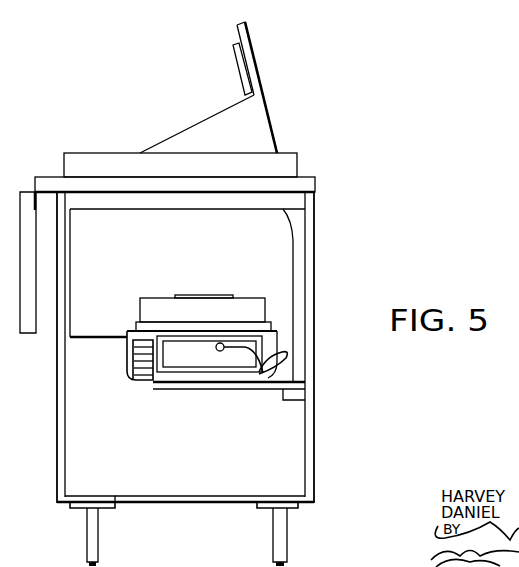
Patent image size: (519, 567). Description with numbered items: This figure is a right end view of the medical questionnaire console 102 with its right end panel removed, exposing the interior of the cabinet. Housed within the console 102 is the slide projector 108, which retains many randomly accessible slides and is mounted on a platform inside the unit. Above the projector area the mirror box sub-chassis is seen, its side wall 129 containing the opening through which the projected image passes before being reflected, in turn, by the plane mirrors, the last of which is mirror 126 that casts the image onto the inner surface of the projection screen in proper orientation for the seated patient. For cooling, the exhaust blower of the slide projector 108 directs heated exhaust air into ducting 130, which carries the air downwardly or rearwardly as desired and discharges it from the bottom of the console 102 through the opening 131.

The medical questionnaire console 102 is at (130, 103).
The plane mirror 126 is at (236, 74).
The side wall 129 is at (149, 256).
The slide projector 108 is at (224, 286).
The ducting 130 is at (112, 381).
The opening 131 is at (199, 499).